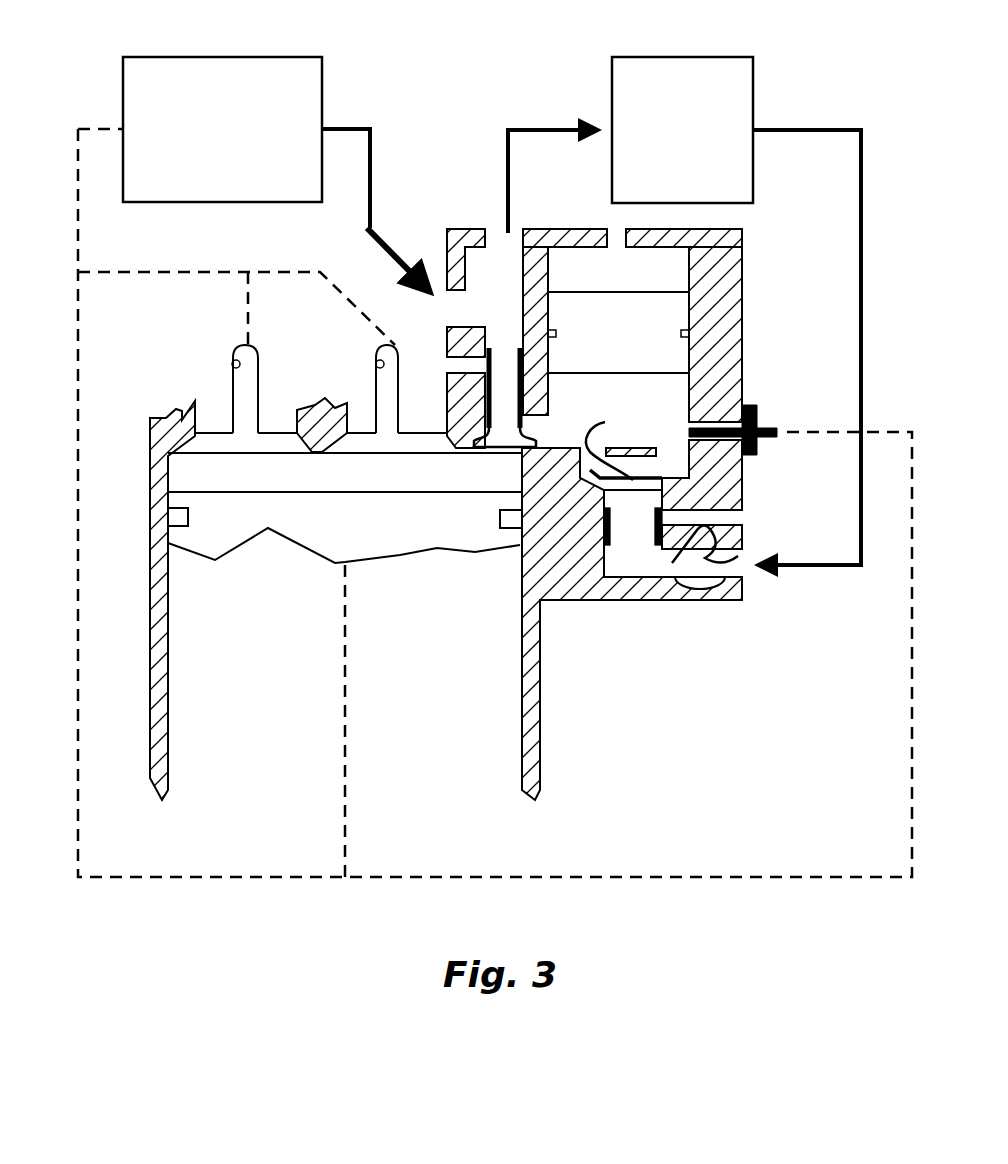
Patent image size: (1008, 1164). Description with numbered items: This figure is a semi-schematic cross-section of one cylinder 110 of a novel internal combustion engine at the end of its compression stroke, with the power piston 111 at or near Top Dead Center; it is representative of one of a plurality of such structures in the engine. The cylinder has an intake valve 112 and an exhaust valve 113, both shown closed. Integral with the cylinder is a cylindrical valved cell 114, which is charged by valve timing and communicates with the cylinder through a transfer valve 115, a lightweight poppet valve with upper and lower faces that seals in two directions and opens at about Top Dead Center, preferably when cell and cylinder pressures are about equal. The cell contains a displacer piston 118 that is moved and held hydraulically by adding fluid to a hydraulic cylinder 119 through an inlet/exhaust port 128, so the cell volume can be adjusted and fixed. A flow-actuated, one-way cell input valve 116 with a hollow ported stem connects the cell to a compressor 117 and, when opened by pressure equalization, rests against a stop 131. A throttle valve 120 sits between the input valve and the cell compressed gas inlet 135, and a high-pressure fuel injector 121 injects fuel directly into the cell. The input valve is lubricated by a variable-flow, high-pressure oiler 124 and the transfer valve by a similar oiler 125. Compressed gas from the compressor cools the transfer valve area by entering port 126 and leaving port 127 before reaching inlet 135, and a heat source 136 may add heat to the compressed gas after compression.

The cylinder 110 is at (525, 680).
The power piston 111 is at (305, 527).
The intake valve 112 is at (245, 400).
The exhaust valve 113 is at (397, 403).
The valved cell 114 is at (689, 380).
The transfer valve 115 is at (510, 448).
The cell input valve 116 is at (603, 478).
The compressor 117 is at (152, 90).
The piston 118 is at (660, 321).
The hydraulic cylinder 119 is at (689, 280).
The throttle valve 120 is at (740, 540).
The fuel injector 121 is at (748, 408).
The oiler 124 is at (742, 517).
The oiler 125 is at (435, 355).
The gas inlet port 126 is at (443, 320).
The gas outlet port 127 is at (497, 230).
The inlet/exhaust port 128 is at (612, 230).
The stop 131 is at (655, 453).
The cell compressed gas inlet 135 is at (745, 572).
The heat source 136 is at (725, 80).